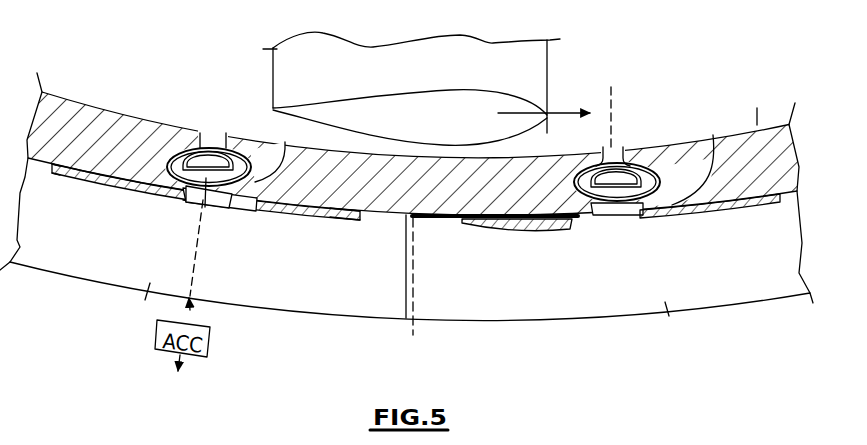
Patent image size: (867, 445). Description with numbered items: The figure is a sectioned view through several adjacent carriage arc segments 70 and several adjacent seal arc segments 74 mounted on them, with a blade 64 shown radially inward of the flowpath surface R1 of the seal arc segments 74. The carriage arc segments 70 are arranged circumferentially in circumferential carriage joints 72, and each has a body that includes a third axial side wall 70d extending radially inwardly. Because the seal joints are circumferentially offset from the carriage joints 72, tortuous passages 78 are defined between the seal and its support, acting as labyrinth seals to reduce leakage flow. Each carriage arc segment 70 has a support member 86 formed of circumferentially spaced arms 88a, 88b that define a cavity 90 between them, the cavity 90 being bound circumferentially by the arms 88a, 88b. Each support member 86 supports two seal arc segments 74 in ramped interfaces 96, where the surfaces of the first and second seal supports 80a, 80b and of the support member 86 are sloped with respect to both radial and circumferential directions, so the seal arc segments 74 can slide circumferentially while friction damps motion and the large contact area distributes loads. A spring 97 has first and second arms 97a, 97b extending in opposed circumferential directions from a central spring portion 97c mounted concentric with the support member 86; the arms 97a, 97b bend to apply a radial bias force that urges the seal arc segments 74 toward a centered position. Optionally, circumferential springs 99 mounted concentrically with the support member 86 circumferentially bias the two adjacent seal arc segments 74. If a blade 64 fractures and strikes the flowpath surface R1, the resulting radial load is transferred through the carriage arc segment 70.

The blade 64 is at (537, 58).
The carriage arc segment 70 is at (325, 321).
The third axial side wall 70d is at (147, 294).
The circumferential carriage joint 72 is at (405, 298).
The seal arc segment 74 is at (107, 105).
The tortuous passage 78 is at (414, 278).
The first seal support 80a is at (582, 165).
The second seal support 80b is at (256, 212).
The support member 86 is at (713, 135).
The arm 88a is at (275, 168).
The arm 88b is at (163, 170).
The cavity 90 is at (213, 148).
The ramped interface 96 is at (568, 214).
The spring 97 is at (273, 238).
The first arm 97a is at (333, 222).
The second arm 97b is at (102, 194).
The central spring portion 97c is at (191, 203).
The circumferential spring 99 is at (190, 200).
The flowpath surface R1 is at (757, 108).